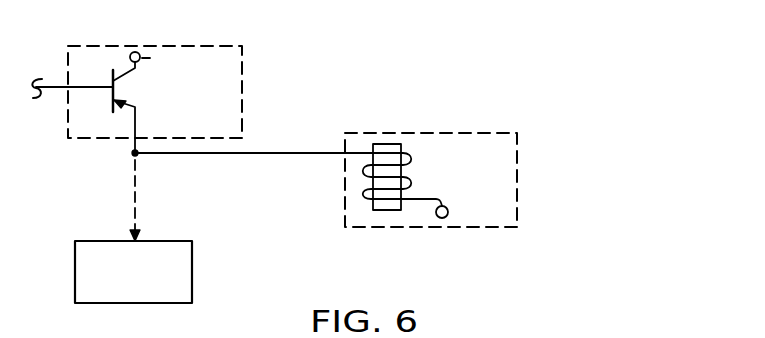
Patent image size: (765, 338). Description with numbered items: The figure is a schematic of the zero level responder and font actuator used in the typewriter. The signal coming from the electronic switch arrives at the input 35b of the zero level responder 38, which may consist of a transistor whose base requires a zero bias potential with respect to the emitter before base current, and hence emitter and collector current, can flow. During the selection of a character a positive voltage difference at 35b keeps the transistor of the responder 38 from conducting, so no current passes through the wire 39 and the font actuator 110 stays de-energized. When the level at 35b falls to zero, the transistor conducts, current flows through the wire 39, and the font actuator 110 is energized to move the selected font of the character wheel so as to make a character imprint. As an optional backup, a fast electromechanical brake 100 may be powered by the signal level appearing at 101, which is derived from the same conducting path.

The input to zero level responder 35b is at (52, 87).
The zero level responder 38 is at (244, 77).
The wire 39 is at (247, 155).
The signal level point for brake 101 is at (131, 161).
The fast electromechanical brake 100 is at (193, 275).
The font actuator 110 is at (519, 170).